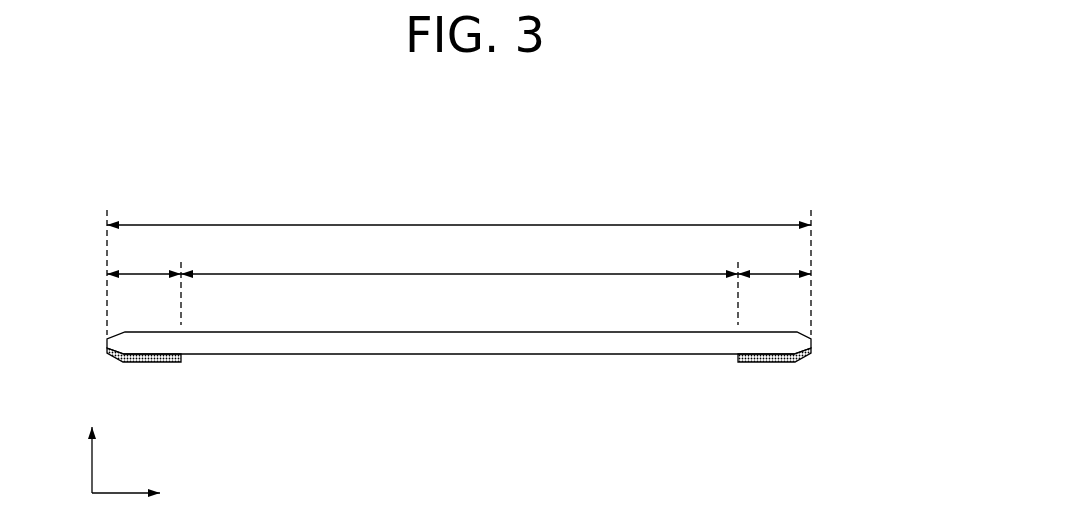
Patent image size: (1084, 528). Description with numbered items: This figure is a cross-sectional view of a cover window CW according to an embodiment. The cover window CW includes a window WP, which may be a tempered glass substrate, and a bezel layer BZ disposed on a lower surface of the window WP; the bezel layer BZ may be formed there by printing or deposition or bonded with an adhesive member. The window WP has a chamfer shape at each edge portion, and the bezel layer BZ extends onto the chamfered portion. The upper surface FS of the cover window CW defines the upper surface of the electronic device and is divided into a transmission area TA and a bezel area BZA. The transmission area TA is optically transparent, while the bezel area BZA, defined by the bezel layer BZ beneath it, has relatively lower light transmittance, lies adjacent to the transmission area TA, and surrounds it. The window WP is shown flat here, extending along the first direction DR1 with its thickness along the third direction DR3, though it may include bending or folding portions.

The cover window CW is at (789, 178).
The window WP is at (798, 342).
The bezel layer BZ is at (808, 350).
The upper surface FS is at (459, 211).
The transmission area TA is at (459, 259).
The bezel area BZA is at (459, 260).
The first direction DR1 is at (147, 492).
The third direction DR3 is at (92, 445).